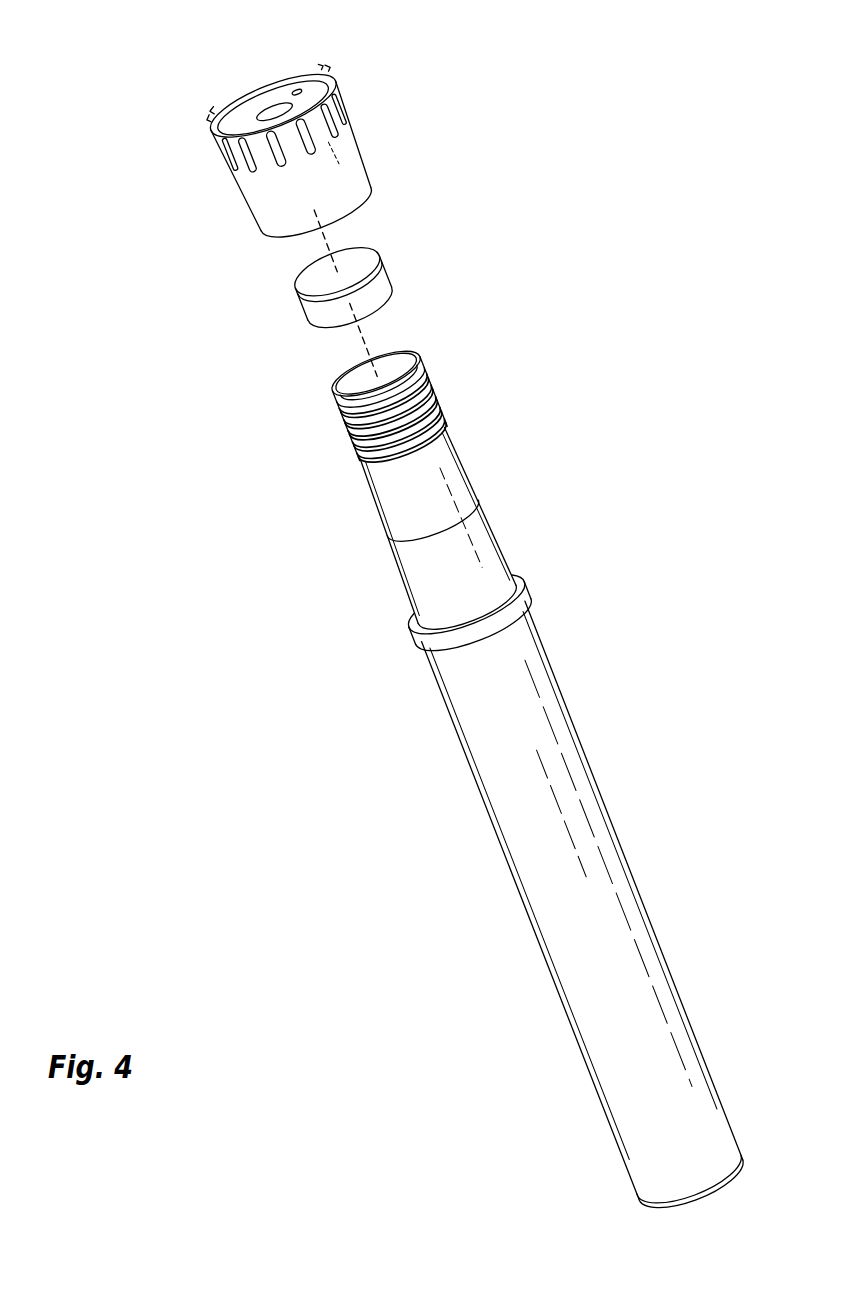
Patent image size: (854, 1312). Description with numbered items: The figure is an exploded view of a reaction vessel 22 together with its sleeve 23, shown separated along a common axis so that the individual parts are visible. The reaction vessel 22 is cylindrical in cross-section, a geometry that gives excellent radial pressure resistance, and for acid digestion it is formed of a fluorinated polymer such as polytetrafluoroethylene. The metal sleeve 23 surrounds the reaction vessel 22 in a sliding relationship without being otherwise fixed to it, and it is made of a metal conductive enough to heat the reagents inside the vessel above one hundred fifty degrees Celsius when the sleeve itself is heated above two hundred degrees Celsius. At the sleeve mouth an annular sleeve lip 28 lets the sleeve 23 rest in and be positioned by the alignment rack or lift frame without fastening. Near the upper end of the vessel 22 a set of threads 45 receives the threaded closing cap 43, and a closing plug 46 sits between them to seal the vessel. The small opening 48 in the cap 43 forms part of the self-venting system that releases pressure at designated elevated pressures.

The reaction vessel 22 is at (490, 572).
The sleeve 23 is at (581, 800).
The sleeve lip 28 is at (534, 596).
The threaded closing cap 43 is at (358, 172).
The threads 45 is at (438, 406).
The closing plug 46 is at (372, 297).
The small opening 48 is at (293, 80).